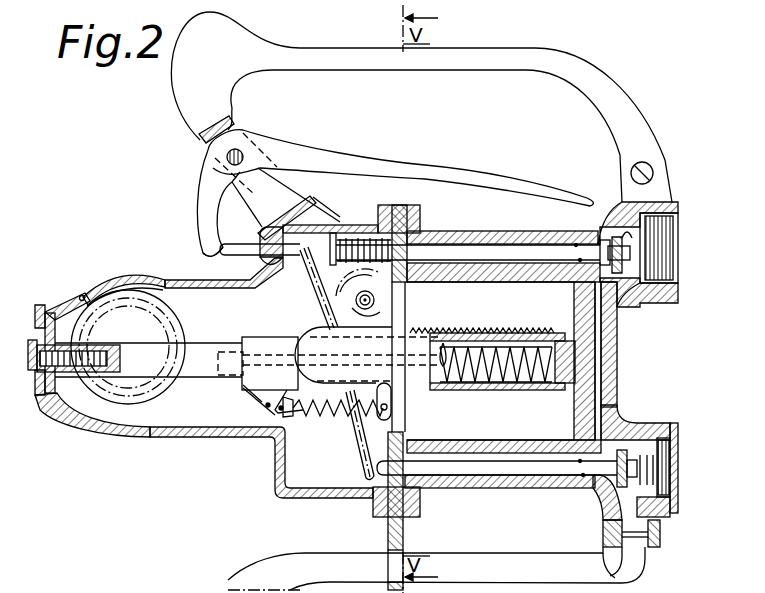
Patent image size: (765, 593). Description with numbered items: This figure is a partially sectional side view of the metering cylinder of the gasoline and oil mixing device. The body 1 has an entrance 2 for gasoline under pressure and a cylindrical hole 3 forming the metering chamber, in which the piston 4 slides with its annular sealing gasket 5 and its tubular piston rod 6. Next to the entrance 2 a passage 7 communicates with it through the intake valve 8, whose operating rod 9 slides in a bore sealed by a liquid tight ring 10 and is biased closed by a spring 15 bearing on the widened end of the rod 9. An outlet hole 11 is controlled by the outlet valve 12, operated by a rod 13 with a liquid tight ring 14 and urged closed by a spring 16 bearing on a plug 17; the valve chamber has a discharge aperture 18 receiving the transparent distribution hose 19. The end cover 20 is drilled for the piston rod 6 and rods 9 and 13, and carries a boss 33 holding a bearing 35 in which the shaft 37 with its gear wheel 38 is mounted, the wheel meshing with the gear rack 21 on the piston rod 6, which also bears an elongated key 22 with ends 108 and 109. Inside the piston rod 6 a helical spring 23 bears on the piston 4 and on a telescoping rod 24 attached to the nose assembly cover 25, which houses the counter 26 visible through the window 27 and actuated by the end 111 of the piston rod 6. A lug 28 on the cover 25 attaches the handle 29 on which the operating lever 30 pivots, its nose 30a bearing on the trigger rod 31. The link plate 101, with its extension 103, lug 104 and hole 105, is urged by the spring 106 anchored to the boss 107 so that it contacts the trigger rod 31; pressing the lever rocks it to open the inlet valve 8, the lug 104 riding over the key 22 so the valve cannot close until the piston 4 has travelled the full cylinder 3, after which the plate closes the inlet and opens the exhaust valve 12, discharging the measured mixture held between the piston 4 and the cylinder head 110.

The body 1 is at (503, 238).
The entrance 2 is at (666, 300).
The cylindrical hole 3 is at (518, 313).
The piston 4 is at (574, 408).
The annular sealing gasket 5 is at (578, 294).
The tubular piston rod 6 is at (515, 379).
The passage 7 is at (615, 302).
The valve 8 is at (626, 233).
The rod 9 is at (455, 252).
The liquid tight ring 10 is at (577, 244).
The outlet hole 11 is at (620, 432).
The valve 12 is at (645, 435).
The rod 13 is at (503, 476).
The ring 14 is at (577, 479).
The spring 15 is at (352, 235).
The spring 16 is at (645, 498).
The plug 17 is at (668, 533).
The discharge aperture 18 is at (606, 523).
The distribution hose 19 is at (633, 566).
The end cover 20 is at (395, 225).
The gear rack 21 is at (484, 338).
The elongated key 22 is at (432, 365).
The helical spring 23 is at (478, 376).
The rod 24 is at (203, 378).
The nose assembly cover 25 is at (157, 438).
The counter 26 is at (186, 334).
The window 27 is at (106, 278).
The lug 28 is at (266, 212).
The handle 29 is at (183, 80).
The operating lever 30 is at (293, 157).
The nose 30a is at (206, 222).
The trigger rod 31 is at (252, 268).
The boss 33 is at (322, 330).
The bearing 35 is at (374, 309).
The shaft 37 is at (374, 300).
The gear wheel 38 is at (350, 282).
The link plate 101 is at (358, 461).
The extension 103 is at (272, 416).
The lug 104 is at (262, 402).
The hole 105 is at (268, 429).
The spring 106 is at (325, 416).
The boss 107 is at (383, 414).
The end 108 is at (222, 361).
The end 109 is at (444, 344).
The cylinder head 110 is at (608, 360).
The end 111 is at (254, 340).